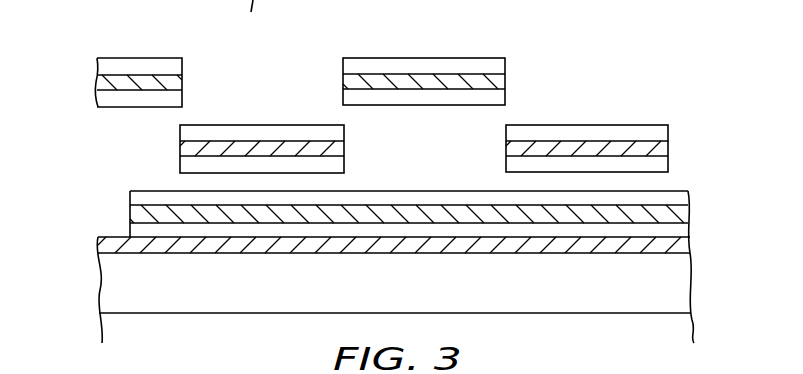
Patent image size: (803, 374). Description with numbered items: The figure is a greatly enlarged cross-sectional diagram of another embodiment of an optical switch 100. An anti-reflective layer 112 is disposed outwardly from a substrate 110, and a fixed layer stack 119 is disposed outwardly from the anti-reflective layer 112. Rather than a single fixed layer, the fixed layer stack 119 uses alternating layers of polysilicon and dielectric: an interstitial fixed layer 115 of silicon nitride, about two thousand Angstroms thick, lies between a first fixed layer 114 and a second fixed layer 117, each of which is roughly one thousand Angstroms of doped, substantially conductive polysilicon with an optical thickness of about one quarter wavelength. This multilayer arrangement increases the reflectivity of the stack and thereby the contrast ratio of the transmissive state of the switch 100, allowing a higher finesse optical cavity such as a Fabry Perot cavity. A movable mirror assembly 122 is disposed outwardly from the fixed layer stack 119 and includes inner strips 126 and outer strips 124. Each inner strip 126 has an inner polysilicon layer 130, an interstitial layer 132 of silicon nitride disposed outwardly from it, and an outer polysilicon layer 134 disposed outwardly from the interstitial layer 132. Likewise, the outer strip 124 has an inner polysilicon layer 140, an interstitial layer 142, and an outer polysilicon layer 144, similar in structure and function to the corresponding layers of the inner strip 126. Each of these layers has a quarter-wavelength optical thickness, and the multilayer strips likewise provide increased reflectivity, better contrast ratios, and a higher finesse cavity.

The optical switch 100 is at (592, 42).
The substrate 110 is at (415, 293).
The anti-reflective layer 112 is at (98, 243).
The first fixed layer 114 is at (683, 228).
The interstitial fixed layer 115 is at (683, 209).
The second fixed layer 117 is at (683, 196).
The fixed layer stack 119 is at (88, 193).
The movable mirror assembly 122 is at (88, 58).
The outer strip 124 is at (426, 57).
The inner strip 126 is at (592, 124).
The inner polysilicon layer 130 is at (511, 160).
The interstitial layer 132 is at (663, 148).
The outer polysilicon layer 134 is at (647, 132).
The inner polysilicon layer 140 is at (500, 96).
The interstitial layer 142 is at (500, 80).
The outer polysilicon layer 144 is at (475, 66).